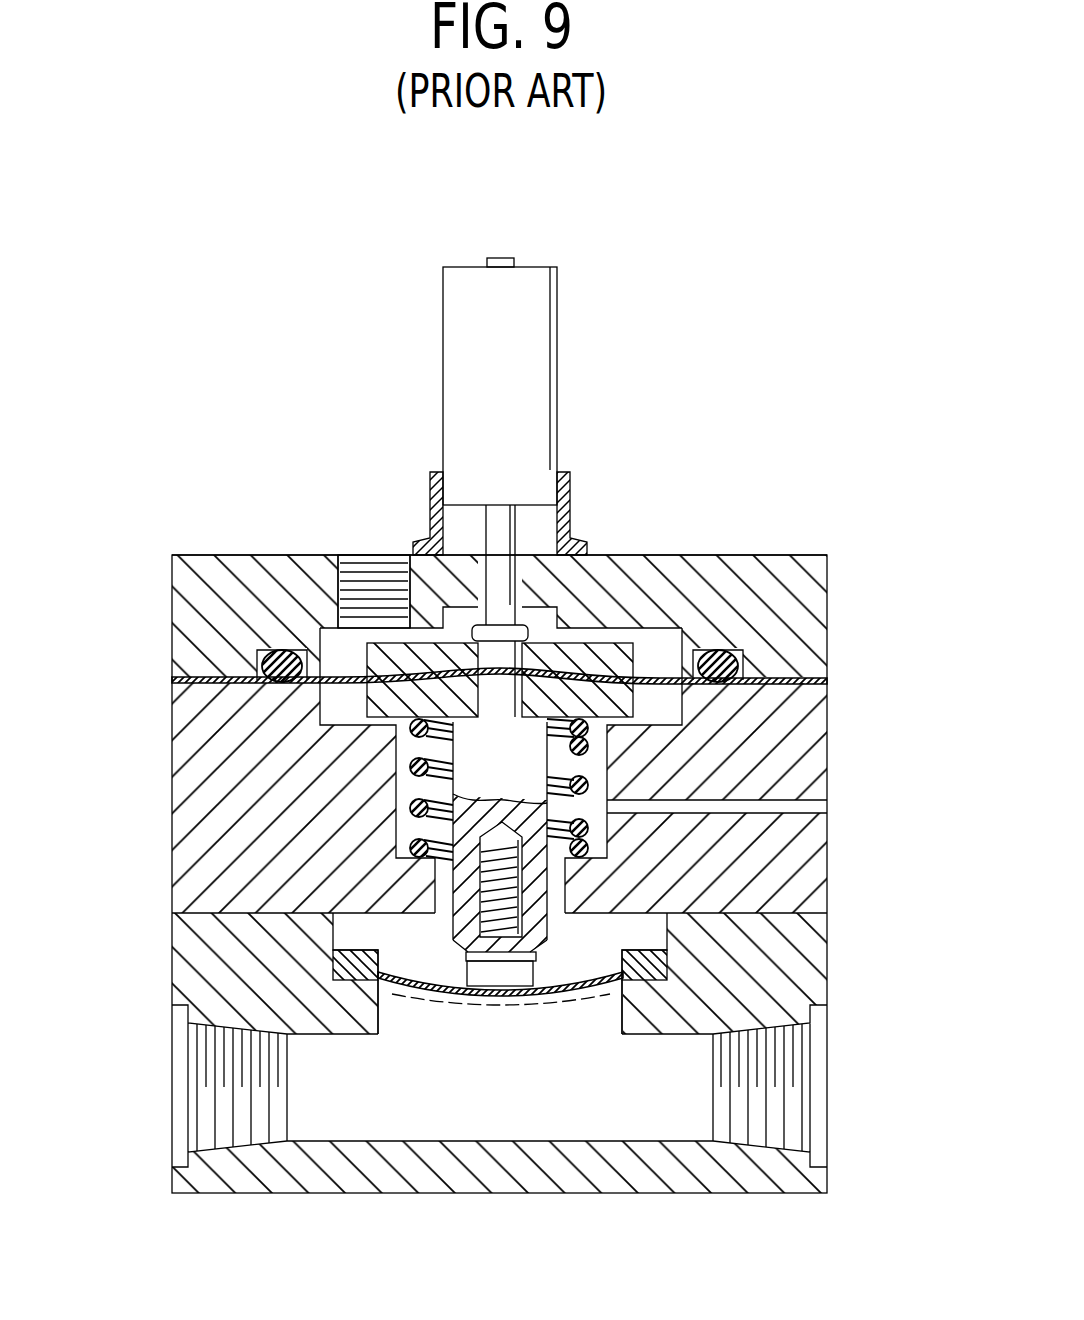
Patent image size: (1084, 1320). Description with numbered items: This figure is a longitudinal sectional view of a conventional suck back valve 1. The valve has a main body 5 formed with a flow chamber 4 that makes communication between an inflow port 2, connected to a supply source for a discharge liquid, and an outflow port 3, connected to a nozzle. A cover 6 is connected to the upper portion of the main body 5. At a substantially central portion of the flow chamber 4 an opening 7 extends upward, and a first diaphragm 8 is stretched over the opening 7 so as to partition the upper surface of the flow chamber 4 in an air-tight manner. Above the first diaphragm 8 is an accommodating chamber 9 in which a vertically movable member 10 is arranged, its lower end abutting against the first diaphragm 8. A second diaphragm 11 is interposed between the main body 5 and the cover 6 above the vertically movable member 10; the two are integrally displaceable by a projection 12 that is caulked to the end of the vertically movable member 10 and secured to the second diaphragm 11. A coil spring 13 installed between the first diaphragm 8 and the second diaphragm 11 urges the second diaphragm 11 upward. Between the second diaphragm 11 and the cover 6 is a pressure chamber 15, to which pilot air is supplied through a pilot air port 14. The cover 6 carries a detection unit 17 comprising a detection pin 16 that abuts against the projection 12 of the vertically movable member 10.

The suck back valve 1 is at (797, 192).
The inflow port 2 is at (215, 1098).
The outflow port 3 is at (767, 1095).
The flow chamber 4 is at (499, 1053).
The main body 5 is at (162, 795).
The cover 6 is at (234, 590).
The opening 7 is at (386, 1015).
The first diaphragm 8 is at (582, 990).
The accommodating chamber 9 is at (500, 973).
The vertically movable member 10 is at (537, 877).
The second diaphragm 11 is at (792, 675).
The projection 12 is at (518, 635).
The coil spring 13 is at (587, 788).
The pilot air port 14 is at (378, 600).
The pressure chamber 15 is at (345, 648).
The detection pin 16 is at (503, 518).
The detection unit 17 is at (505, 378).